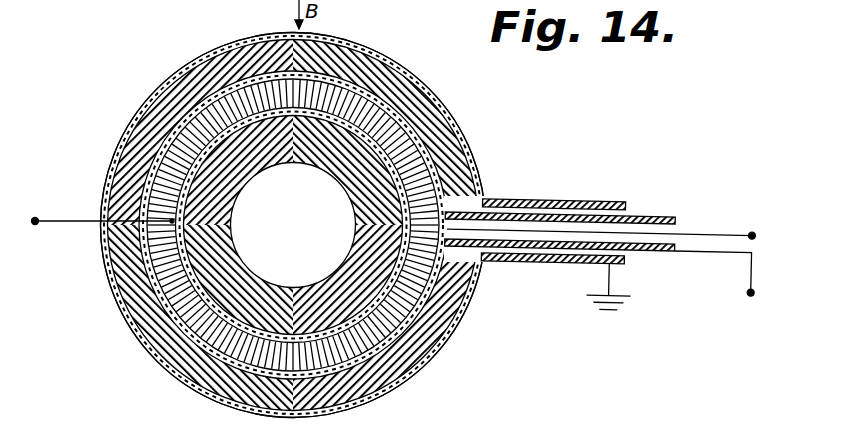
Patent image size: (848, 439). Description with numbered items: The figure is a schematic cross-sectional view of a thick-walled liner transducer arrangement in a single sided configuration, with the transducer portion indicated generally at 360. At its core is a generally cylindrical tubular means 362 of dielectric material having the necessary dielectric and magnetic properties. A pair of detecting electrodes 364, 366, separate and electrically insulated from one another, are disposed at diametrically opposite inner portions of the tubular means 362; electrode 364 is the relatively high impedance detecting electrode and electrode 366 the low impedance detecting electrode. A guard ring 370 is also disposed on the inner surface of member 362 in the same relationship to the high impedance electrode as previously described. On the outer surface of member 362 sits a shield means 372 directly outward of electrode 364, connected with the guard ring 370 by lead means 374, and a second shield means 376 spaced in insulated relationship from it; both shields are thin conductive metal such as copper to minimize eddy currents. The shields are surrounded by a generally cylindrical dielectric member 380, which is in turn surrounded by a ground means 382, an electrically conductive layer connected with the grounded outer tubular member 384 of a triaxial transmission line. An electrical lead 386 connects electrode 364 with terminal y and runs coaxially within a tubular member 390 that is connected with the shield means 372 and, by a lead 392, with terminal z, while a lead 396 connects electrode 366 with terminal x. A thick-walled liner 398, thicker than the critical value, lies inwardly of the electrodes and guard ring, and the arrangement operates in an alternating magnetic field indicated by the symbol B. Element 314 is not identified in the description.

The intermediate electrode layer 314 is at (336, 360).
The transducer portion 360 is at (341, 419).
The tubular means 362 is at (210, 343).
The high impedance detecting electrode 364 is at (420, 179).
The low impedance detecting electrode 366 is at (217, 247).
The guard ring 370 is at (316, 117).
The shield means 372 is at (452, 125).
The lead means 374 is at (345, 82).
The second shield means 376 is at (157, 148).
The cylindrical member 380 is at (433, 352).
The ground means 382 is at (145, 352).
The outer tubular member 384 is at (522, 261).
The electrical lead 386 is at (725, 227).
The tubular member 390 is at (660, 183).
The lead 392 is at (755, 277).
The lead 396 is at (69, 220).
The thick-walled liner 398 is at (217, 208).